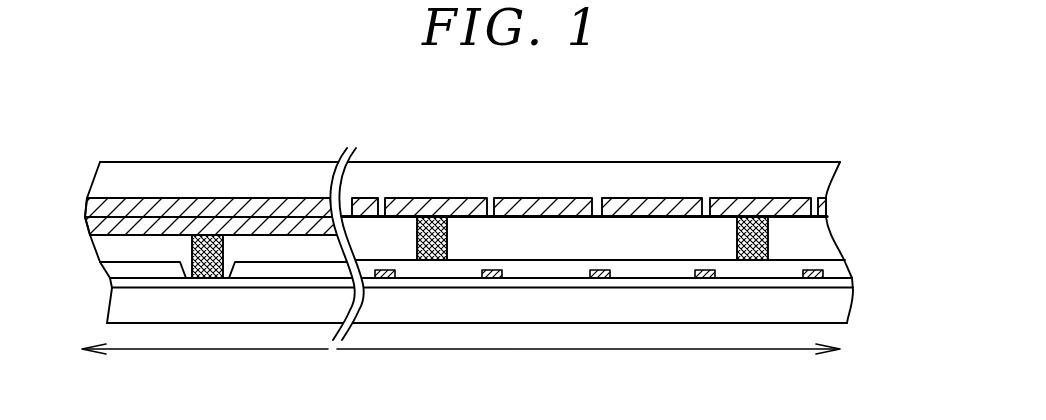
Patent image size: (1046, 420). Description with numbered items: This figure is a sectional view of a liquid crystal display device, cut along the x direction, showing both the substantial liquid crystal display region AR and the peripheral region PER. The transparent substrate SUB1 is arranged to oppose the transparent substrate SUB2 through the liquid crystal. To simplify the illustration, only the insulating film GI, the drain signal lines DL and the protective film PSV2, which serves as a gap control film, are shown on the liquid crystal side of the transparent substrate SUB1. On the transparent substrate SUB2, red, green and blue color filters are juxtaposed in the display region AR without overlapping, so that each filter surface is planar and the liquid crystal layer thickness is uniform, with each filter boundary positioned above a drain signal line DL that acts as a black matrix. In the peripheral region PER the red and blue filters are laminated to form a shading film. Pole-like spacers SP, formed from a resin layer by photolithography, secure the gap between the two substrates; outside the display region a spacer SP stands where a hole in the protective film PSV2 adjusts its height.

The transparent substrate SUB2 is at (806, 170).
The transparent substrate SUB1 is at (837, 307).
The pole-like spacer SP is at (212, 282).
The protective film PSV2 is at (842, 266).
The insulating film GI is at (853, 281).
The drain signal line DL is at (489, 279).
The peripheral region PER is at (205, 363).
The liquid crystal display region AR is at (588, 363).